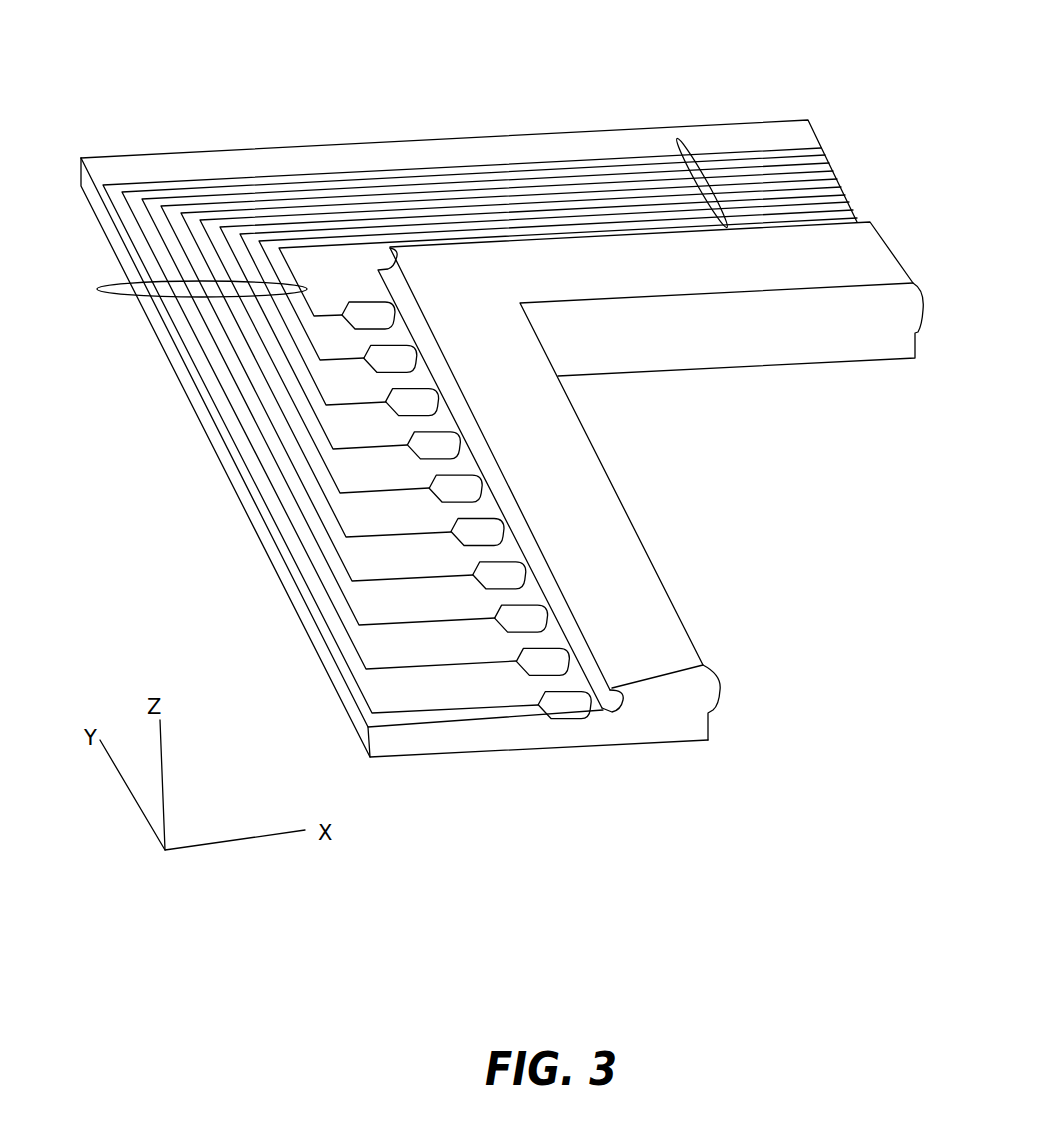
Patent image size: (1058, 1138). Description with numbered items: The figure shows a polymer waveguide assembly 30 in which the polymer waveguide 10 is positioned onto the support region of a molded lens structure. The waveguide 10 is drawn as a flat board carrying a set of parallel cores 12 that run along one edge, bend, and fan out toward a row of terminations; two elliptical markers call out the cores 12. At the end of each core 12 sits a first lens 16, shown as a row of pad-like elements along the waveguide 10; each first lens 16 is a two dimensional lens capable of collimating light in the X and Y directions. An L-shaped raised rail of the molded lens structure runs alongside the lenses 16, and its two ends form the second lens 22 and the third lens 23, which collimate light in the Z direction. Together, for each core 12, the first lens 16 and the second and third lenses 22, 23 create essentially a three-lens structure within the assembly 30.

The polymer waveguide 10 is at (143, 155).
The core 12 is at (115, 288).
The first lens 16 is at (392, 362).
The second lens 22 is at (882, 308).
The third lens 23 is at (608, 703).
The polymer waveguide assembly 30 is at (733, 102).